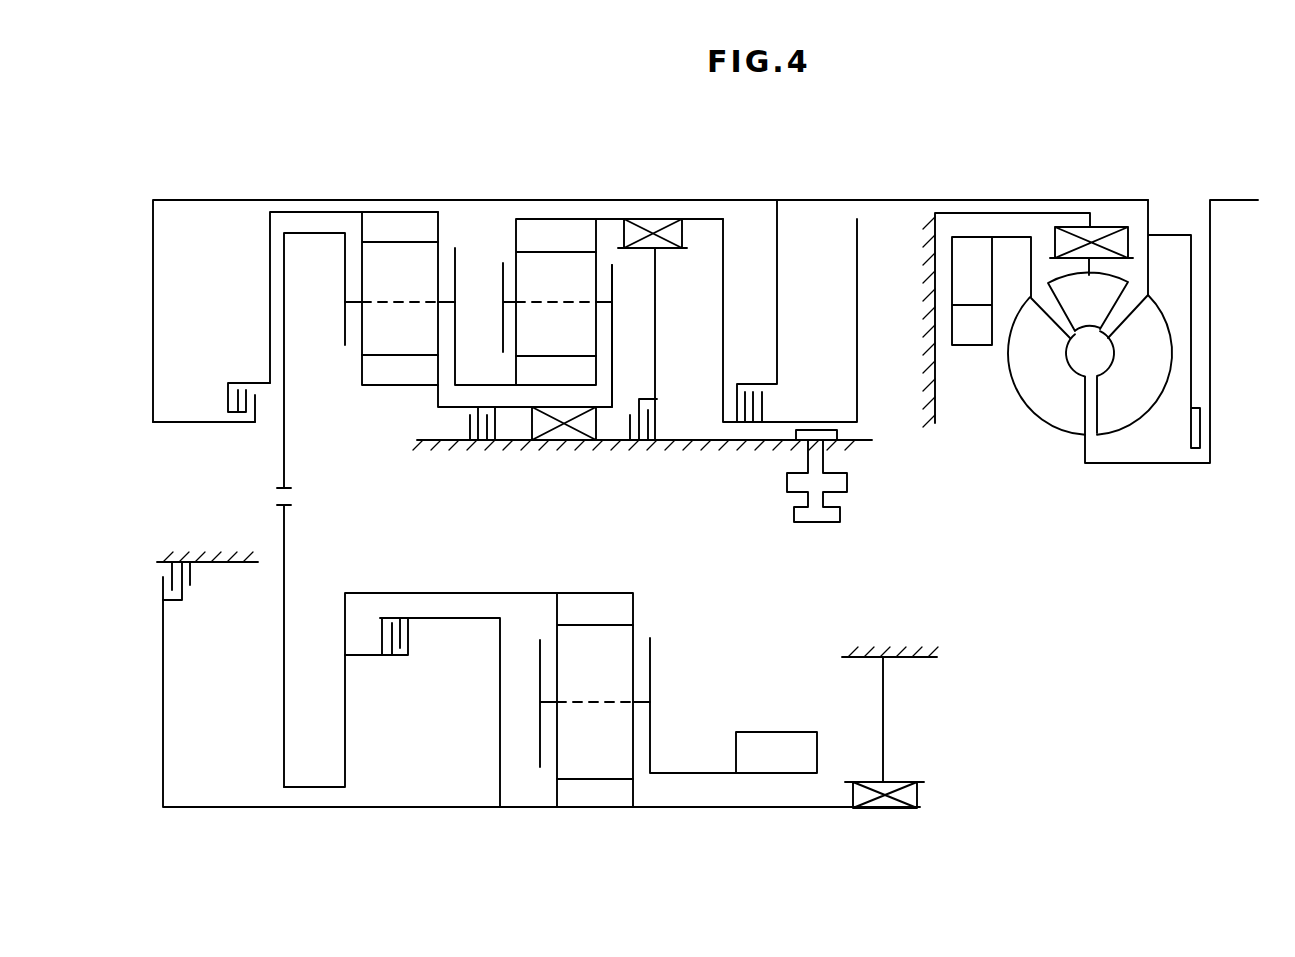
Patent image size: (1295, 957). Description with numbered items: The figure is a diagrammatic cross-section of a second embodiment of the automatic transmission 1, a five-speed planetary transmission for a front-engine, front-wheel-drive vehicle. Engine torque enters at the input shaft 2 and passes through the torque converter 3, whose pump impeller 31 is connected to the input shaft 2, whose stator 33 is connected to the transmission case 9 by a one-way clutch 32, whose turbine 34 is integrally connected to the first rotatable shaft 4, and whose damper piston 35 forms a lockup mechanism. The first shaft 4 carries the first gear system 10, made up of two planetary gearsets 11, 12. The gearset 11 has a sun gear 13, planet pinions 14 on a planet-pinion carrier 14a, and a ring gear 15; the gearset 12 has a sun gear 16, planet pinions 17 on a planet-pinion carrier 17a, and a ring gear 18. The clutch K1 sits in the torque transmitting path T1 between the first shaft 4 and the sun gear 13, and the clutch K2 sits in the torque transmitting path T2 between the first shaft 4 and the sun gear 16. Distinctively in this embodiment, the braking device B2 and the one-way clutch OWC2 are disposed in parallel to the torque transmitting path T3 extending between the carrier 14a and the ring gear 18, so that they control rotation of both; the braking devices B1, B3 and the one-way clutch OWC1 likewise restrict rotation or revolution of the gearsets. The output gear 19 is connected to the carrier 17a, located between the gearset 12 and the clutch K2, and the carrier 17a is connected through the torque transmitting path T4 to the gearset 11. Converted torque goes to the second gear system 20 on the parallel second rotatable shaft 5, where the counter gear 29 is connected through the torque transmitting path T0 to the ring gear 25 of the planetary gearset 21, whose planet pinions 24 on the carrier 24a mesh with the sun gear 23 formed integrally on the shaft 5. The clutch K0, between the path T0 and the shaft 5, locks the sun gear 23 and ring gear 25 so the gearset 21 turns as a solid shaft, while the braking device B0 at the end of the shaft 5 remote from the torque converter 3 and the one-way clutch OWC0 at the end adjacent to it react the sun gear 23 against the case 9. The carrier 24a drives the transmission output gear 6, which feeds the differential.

The automatic transmission 1 is at (848, 198).
The input shaft 2 is at (1238, 200).
The torque converter 3 is at (1058, 438).
The first rotatable shaft 4 is at (763, 200).
The second rotatable shaft 5 is at (668, 807).
The transmission output gear 6 is at (762, 762).
The transmission case 9 is at (695, 445).
The first gear system 10 is at (632, 200).
The planetary gearset 11 is at (582, 213).
The planetary gearset 12 is at (434, 215).
The sun gear 13 is at (552, 228).
The planet pinions 14 is at (528, 262).
The planet-pinion carrier 14a is at (503, 272).
The ring gear 15 is at (512, 375).
The sun gear 16 is at (390, 222).
The planet pinions 17 is at (370, 320).
The planet-pinion carrier 17a is at (452, 278).
The ring gear 18 is at (385, 378).
The output gear 19 is at (284, 463).
The second gear system 20 is at (388, 810).
The planetary gearset 21 is at (650, 625).
The sun gear 23 is at (570, 803).
The planet pinions 24 is at (622, 683).
The planet-pinion carrier 24a is at (652, 742).
The ring gear 25 is at (590, 607).
The counter gear 29 is at (283, 667).
The pump impeller 31 is at (1030, 383).
The one-way clutch 32 is at (1102, 240).
The stator 33 is at (1065, 288).
The turbine 34 is at (1142, 393).
The damper piston 35 is at (1193, 328).
The clutch K0 is at (376, 638).
The clutch K1 is at (737, 426).
The clutch K2 is at (258, 404).
The braking device B0 is at (180, 603).
The braking device B1 is at (842, 457).
The braking device B2 is at (497, 420).
The braking device B3 is at (666, 410).
The one-way clutch OWC0 is at (893, 807).
The one-way clutch OWC1 is at (653, 228).
The one-way clutch OWC2 is at (552, 442).
The torque transmitting path T0 is at (455, 593).
The torque transmitting path T1 is at (855, 345).
The torque transmitting path T2 is at (270, 250).
The torque transmitting path T3 is at (603, 405).
The torque transmitting path T4 is at (452, 405).